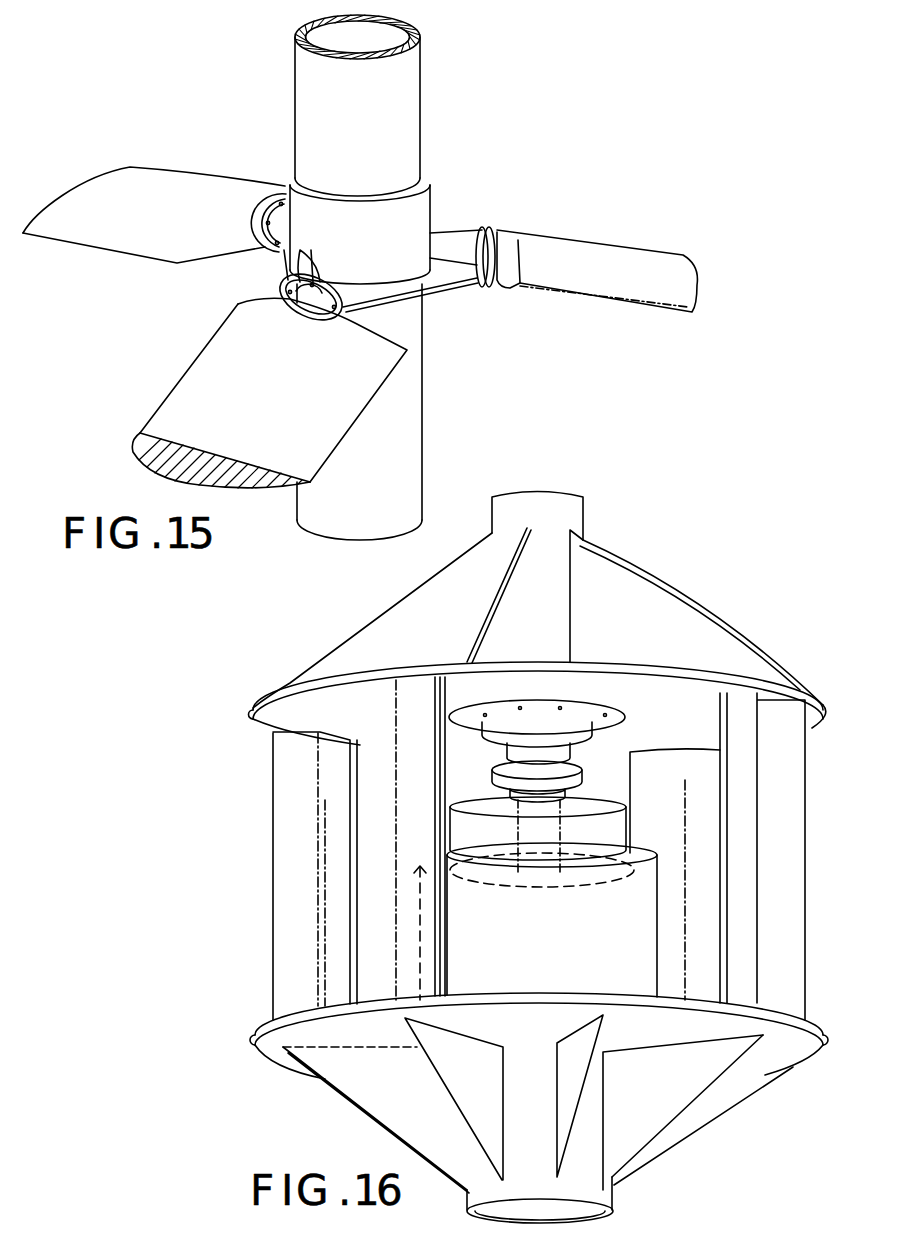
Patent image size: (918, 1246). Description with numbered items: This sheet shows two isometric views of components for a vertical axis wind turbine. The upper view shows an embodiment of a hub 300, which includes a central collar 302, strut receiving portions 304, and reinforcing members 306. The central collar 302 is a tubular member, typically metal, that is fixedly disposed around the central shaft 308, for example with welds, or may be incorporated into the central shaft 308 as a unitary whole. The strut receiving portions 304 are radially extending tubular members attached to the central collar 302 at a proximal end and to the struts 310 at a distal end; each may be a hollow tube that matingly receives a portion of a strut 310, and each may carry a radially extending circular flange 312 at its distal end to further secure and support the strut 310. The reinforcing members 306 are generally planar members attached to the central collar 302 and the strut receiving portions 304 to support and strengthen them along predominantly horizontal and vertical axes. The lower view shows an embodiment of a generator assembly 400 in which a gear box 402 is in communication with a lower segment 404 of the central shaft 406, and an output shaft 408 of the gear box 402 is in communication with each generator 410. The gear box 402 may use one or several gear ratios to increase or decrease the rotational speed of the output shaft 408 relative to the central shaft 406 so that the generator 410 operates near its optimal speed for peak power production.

In FIG. 15, the hub 300 is at (524, 156).
In FIG. 15, the central collar 302 is at (413, 220).
In FIG. 15, the strut receiving portion 304 is at (453, 250).
In FIG. 15, the reinforcing member 306 is at (260, 262).
In FIG. 15, the central shaft 308 is at (393, 137).
In FIG. 15, the strut 310 is at (197, 183).
In FIG. 15, the flange 312 is at (275, 272).
In FIG. 16, the generator assembly 400 is at (714, 607).
In FIG. 16, the gear box 402 is at (502, 827).
In FIG. 16, the lower segment 404 is at (567, 758).
In FIG. 16, the central shaft 406 is at (605, 742).
In FIG. 16, the output shaft 408 is at (500, 862).
In FIG. 16, the generator 410 is at (623, 907).